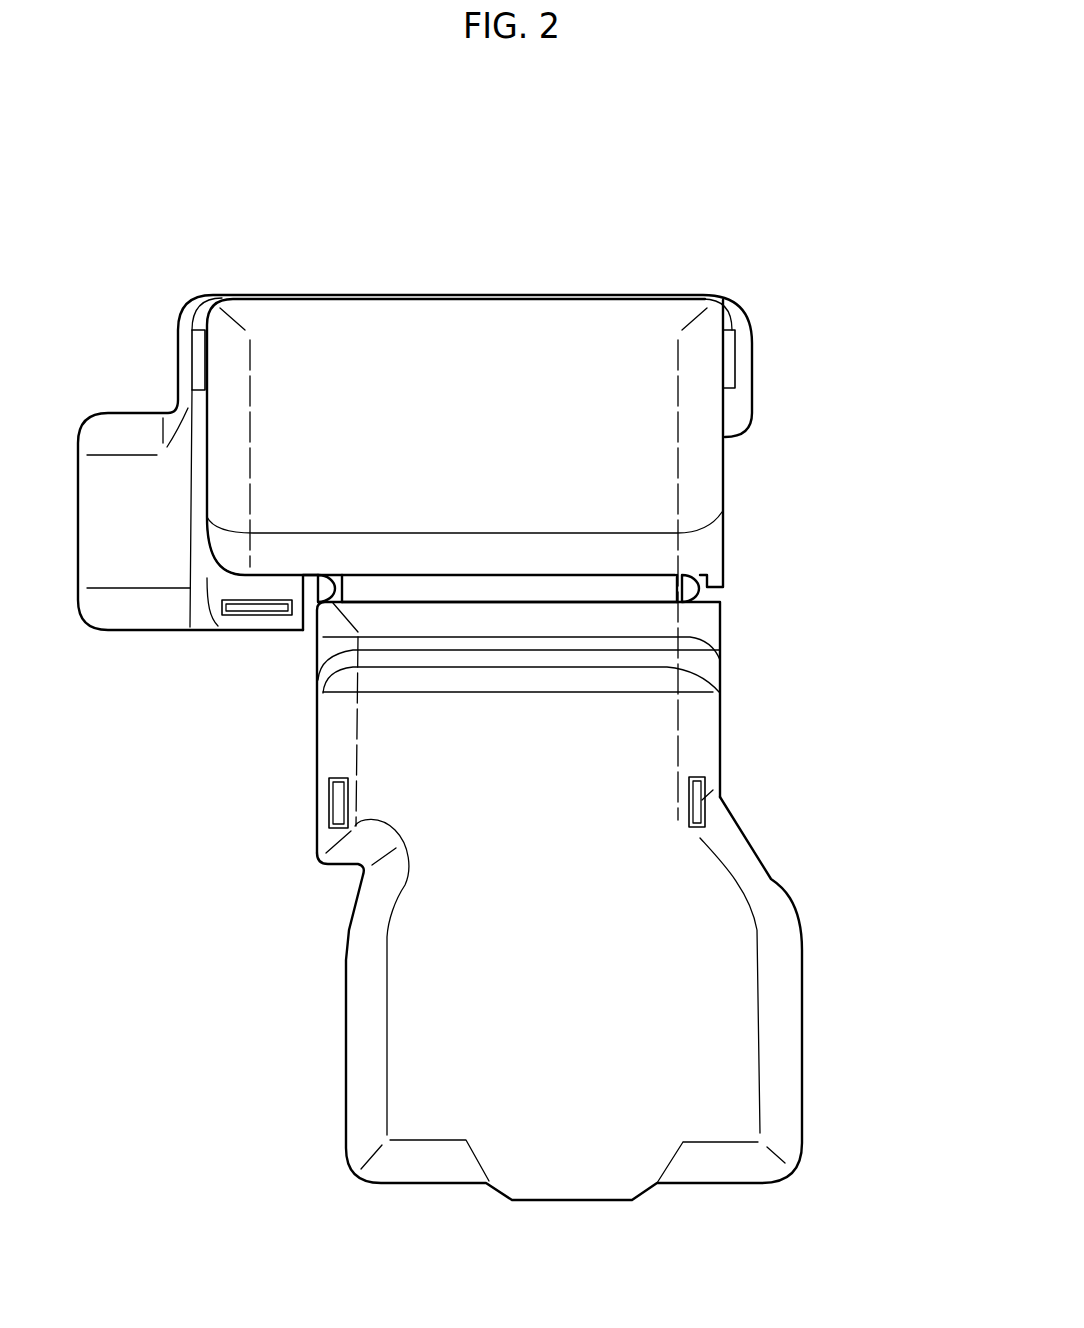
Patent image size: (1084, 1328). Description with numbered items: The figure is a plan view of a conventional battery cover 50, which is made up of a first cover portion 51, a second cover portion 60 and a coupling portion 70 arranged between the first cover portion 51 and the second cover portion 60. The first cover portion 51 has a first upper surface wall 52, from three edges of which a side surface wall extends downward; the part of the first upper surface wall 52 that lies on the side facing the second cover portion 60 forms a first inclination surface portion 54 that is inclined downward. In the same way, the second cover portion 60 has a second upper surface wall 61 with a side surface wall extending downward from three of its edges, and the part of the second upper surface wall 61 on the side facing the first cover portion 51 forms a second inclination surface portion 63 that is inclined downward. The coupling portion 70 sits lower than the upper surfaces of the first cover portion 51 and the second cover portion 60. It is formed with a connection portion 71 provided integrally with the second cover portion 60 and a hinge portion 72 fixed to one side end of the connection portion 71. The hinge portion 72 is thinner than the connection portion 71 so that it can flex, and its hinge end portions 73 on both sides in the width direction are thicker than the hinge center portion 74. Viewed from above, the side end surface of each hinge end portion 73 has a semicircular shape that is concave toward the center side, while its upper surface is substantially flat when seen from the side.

The battery cover 50 is at (251, 186).
The first cover portion 51 is at (740, 476).
The first upper surface wall 52 is at (503, 355).
The first inclination surface portion 54 is at (363, 557).
The second cover portion 60 is at (816, 1016).
The second upper surface wall 61 is at (707, 1087).
The second inclination surface portion 63 is at (527, 682).
The coupling portion 70 is at (870, 502).
The connection portion 71 is at (587, 625).
The hinge portion 72 is at (571, 566).
The hinge end portion 73 is at (699, 590).
The hinge center portion 74 is at (468, 594).